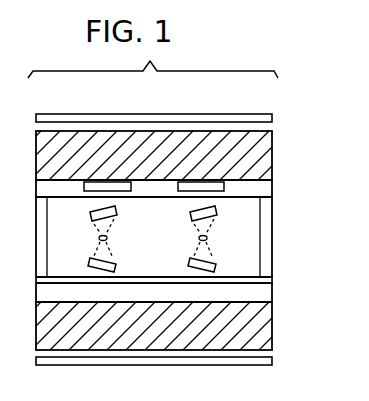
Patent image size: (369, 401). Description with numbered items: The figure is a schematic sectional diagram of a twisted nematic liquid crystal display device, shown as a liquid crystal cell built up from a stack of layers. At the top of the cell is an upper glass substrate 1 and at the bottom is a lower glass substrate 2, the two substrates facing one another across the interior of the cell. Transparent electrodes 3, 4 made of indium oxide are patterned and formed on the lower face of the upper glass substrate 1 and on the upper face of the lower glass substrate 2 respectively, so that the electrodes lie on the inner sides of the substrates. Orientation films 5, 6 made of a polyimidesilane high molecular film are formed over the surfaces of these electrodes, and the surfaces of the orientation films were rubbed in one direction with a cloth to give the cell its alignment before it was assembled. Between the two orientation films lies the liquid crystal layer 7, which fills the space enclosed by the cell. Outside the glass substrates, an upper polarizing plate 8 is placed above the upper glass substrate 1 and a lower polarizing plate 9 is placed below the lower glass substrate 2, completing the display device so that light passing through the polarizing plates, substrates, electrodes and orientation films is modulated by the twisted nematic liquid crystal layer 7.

The upper glass substrate 1 is at (266, 147).
The lower glass substrate 2 is at (262, 328).
The transparent electrode 3 is at (212, 185).
The transparent electrode 4 is at (258, 294).
The orientation film 5 is at (262, 190).
The orientation film 6 is at (265, 281).
The liquid crystal layer 7 is at (240, 228).
The upper polarizing plate 8 is at (272, 118).
The lower polarizing plate 9 is at (272, 362).